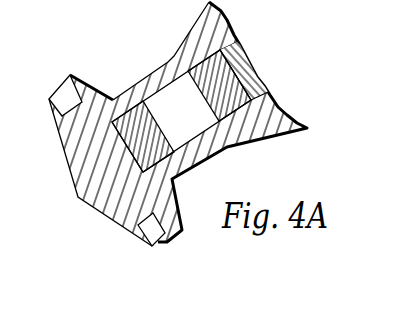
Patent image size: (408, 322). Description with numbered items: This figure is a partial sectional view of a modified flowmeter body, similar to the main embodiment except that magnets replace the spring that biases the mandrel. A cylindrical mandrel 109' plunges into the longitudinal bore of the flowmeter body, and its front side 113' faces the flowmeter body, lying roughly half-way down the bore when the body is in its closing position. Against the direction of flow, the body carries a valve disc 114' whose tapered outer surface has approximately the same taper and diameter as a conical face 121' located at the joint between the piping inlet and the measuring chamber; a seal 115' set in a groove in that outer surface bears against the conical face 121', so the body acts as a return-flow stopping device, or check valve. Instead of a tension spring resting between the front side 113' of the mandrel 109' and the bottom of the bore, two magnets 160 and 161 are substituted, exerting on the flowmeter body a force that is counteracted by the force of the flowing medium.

The cylindrical mandrel 109' is at (261, 64).
The front side of the mandrel 113' is at (175, 51).
The valve disc 114' is at (167, 124).
The seal 115' is at (177, 241).
The conical face 121' is at (59, 77).
The magnet 160 is at (167, 144).
The magnet 161 is at (202, 91).